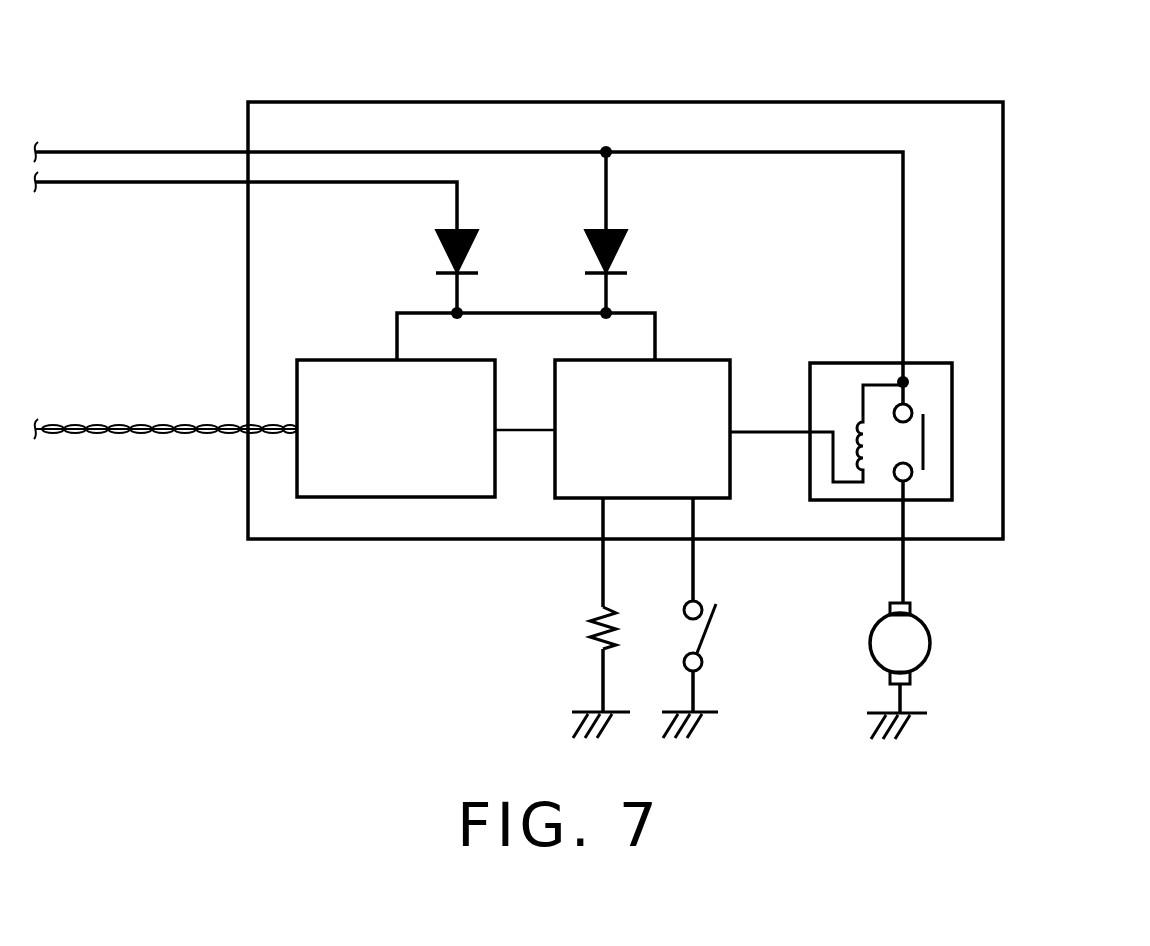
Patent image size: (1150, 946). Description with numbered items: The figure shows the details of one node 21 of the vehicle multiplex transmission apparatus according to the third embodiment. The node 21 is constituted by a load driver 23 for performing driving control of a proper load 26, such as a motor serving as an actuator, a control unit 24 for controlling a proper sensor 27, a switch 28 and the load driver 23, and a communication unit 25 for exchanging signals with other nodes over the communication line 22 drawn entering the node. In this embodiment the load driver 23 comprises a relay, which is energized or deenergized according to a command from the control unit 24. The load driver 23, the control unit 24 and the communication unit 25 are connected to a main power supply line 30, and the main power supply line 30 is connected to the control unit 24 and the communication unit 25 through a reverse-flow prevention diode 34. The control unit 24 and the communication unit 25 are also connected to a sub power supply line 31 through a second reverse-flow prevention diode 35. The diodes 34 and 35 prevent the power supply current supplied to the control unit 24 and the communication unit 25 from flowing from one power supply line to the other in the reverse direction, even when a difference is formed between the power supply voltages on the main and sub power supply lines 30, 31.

The node 21 is at (855, 80).
The communication line (twisted pair) 22 is at (161, 433).
The load driver 23 is at (914, 362).
The control unit 24 is at (686, 361).
The communication unit 25 is at (331, 359).
The load 26 is at (930, 648).
The sensor 27 is at (576, 630).
The switch 28 is at (728, 630).
The main power supply line 30 is at (139, 150).
The sub power supply line 31 is at (104, 185).
The reverse-flow prevention diode 34 is at (620, 252).
The reverse-flow prevention diode 35 is at (442, 243).